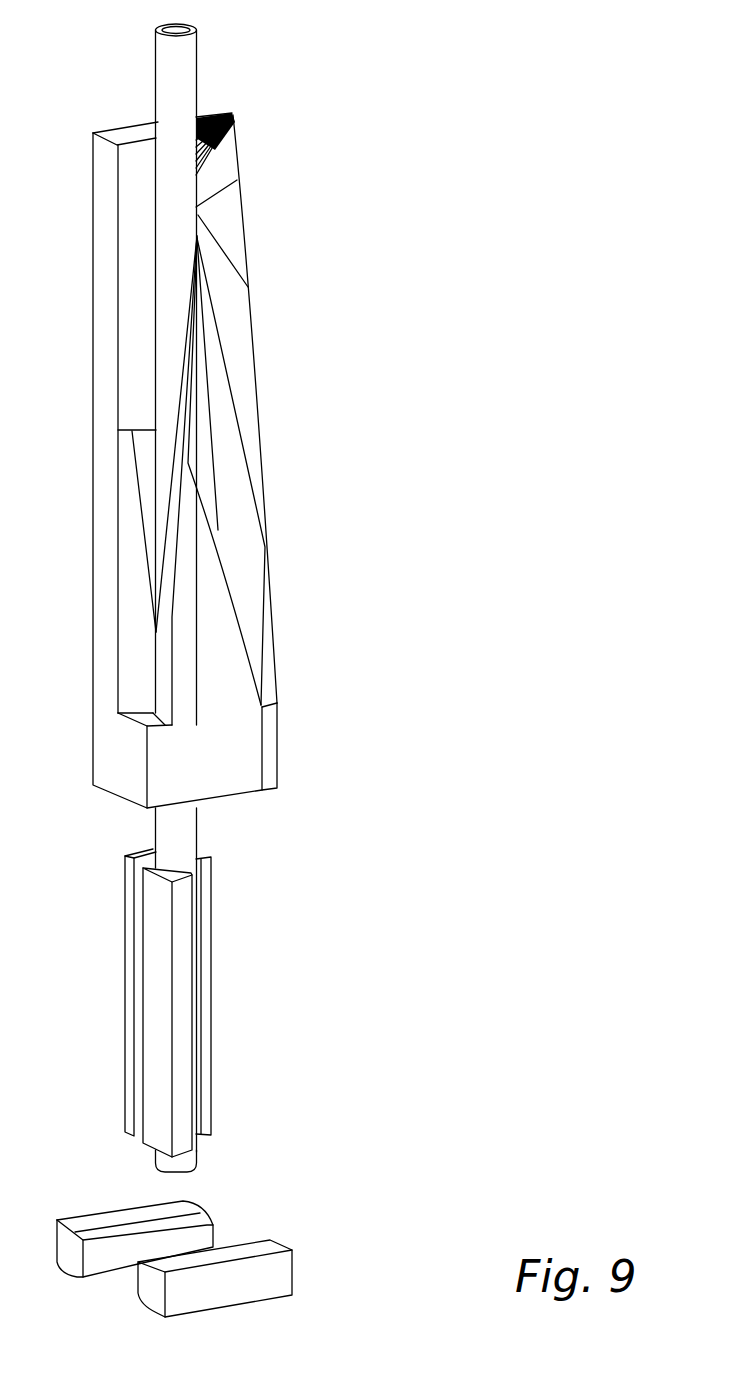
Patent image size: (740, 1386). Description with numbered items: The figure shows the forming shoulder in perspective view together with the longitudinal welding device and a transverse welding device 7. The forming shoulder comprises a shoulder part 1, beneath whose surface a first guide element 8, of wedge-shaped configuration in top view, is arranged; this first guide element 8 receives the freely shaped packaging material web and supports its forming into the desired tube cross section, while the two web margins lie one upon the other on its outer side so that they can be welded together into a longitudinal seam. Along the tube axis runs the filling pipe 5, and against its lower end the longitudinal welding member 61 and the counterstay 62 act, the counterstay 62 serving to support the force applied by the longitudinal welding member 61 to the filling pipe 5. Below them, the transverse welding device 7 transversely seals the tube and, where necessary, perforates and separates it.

The shoulder part 1 is at (238, 350).
The filling pipe 5 is at (183, 83).
The transverse welding device 7 is at (266, 1225).
The first guide element 8 is at (137, 590).
The longitudinal welding member 61 is at (163, 1083).
The counterstay 62 is at (207, 970).